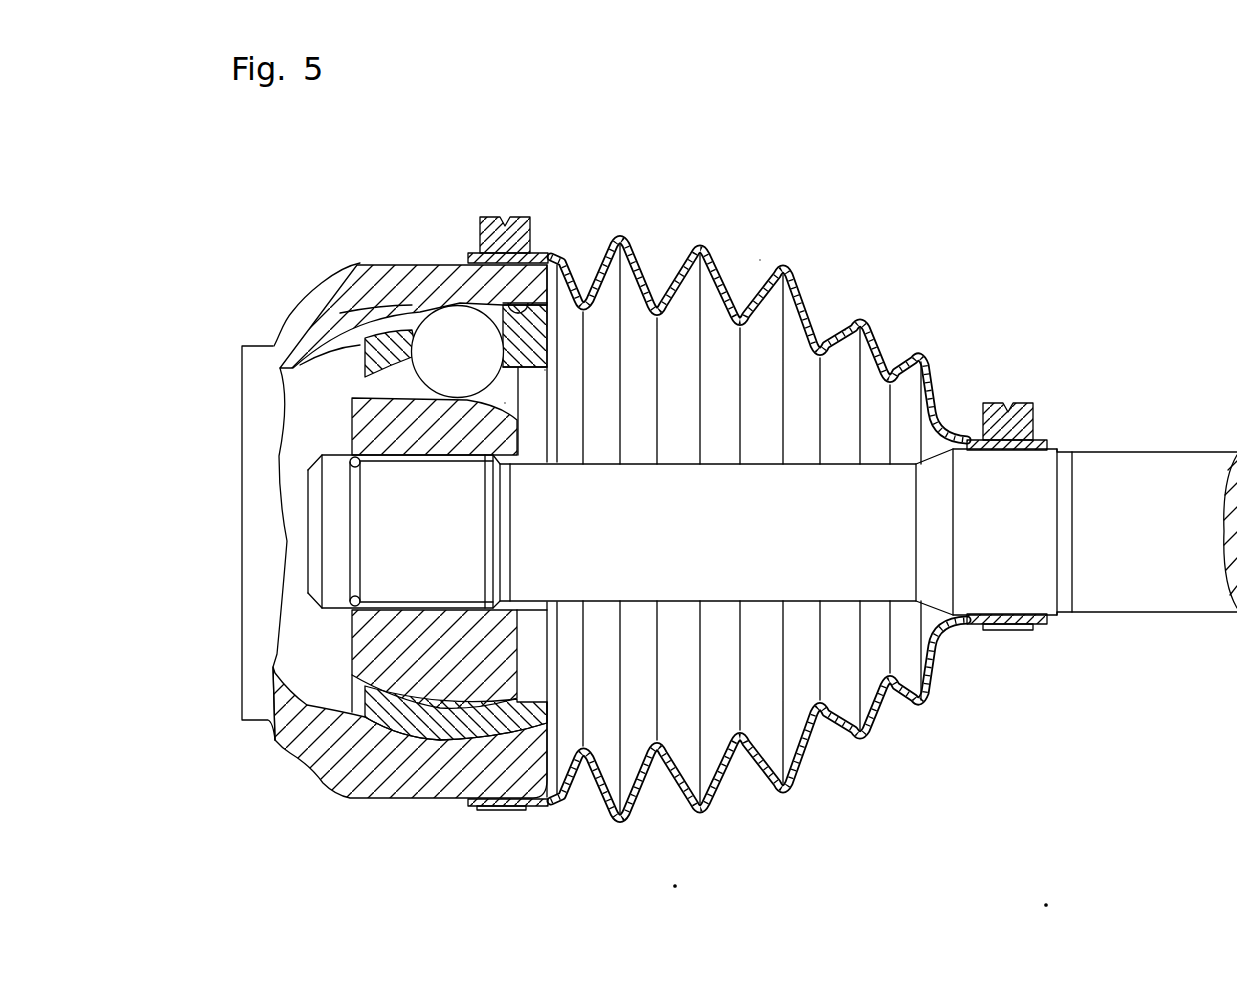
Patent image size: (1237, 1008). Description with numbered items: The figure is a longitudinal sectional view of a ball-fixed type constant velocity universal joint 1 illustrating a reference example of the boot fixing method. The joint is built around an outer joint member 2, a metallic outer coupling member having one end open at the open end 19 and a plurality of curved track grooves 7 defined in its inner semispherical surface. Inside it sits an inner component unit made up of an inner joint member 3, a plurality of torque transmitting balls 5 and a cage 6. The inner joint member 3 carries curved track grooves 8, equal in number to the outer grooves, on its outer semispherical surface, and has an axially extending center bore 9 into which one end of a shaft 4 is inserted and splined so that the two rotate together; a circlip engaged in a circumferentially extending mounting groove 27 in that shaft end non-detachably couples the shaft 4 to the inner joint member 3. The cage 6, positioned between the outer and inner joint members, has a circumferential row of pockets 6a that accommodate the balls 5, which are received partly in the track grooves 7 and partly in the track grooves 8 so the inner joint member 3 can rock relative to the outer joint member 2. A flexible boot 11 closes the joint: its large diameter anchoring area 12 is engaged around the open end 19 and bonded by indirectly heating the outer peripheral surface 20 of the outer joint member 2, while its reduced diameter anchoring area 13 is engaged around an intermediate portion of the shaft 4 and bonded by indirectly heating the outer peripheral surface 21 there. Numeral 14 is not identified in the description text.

The constant velocity universal joint 1 is at (203, 222).
The outer joint member 2 is at (310, 293).
The inner joint member 3 is at (317, 293).
The shaft 4 is at (760, 575).
The torque transmitting balls 5 is at (460, 330).
The cage 6 is at (392, 422).
The pockets 6a is at (545, 370).
The curved track grooves 7 is at (548, 258).
The curved track grooves 8 is at (510, 400).
The center bore 9 is at (452, 598).
The flexible boot 11 is at (769, 270).
The large diameter anchoring area 12 is at (478, 253).
The reduced diameter anchoring area 13 is at (1045, 447).
The bellows crest 14 is at (845, 330).
The open end 19 is at (522, 310).
The outer peripheral surface 20 is at (493, 217).
The outer peripheral surface 21 is at (985, 405).
The mounting groove 27 is at (350, 462).